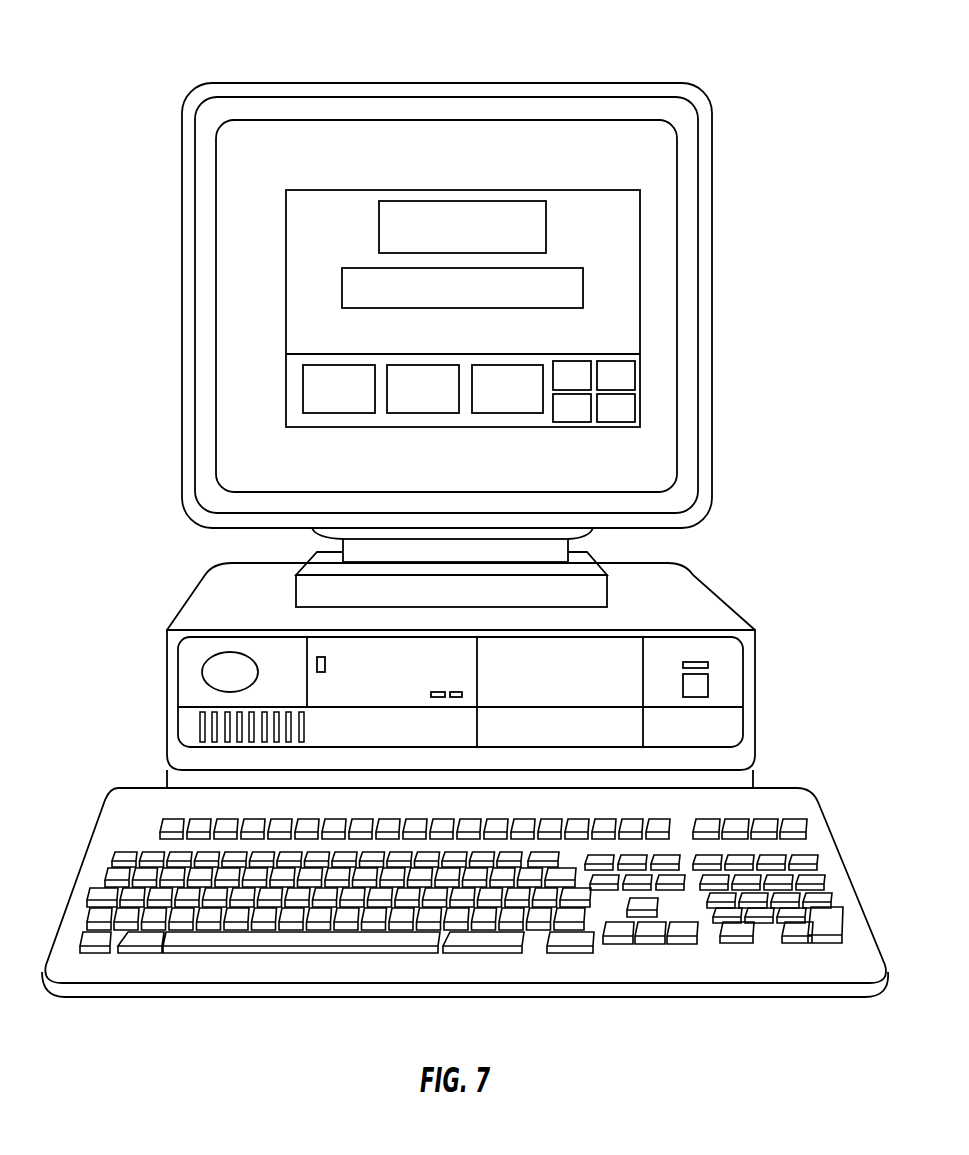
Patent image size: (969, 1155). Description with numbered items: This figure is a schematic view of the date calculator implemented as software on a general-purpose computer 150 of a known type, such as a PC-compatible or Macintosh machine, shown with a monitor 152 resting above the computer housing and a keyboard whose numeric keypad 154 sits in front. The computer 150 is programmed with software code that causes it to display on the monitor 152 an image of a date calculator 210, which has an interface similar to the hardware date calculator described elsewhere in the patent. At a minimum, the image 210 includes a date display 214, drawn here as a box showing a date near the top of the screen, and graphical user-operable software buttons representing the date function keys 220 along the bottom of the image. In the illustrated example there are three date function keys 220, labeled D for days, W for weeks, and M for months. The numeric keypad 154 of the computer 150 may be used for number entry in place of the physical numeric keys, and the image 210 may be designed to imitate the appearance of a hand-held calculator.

The general-purpose computer 150 is at (125, 680).
The monitor 152 is at (182, 297).
The numeric keypad 154 is at (802, 870).
The image of a date calculator 210 is at (278, 255).
The date display 214 is at (532, 217).
The date function keys 220 is at (500, 360).